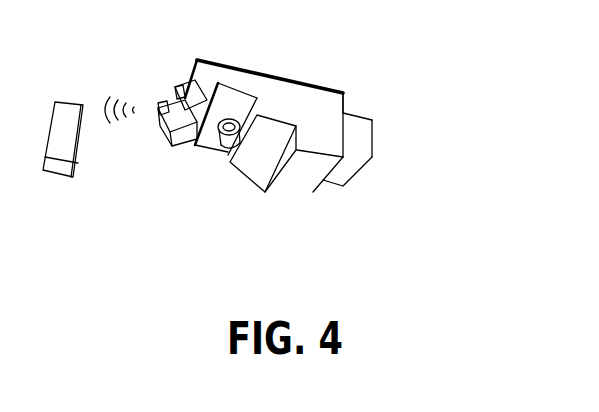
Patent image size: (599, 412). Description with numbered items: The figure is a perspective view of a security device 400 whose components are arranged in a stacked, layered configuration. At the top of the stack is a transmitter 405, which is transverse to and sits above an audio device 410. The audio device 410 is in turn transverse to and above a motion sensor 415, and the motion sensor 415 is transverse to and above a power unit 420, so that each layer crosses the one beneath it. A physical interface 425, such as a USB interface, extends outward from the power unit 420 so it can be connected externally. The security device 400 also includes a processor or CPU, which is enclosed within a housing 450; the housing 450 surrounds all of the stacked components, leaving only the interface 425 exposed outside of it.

The security device 400 is at (452, 63).
The transmitter 405 is at (197, 59).
The audio device 410 is at (225, 150).
The motion sensor 415 is at (252, 162).
The power unit 420 is at (298, 183).
The physical interface 425 is at (362, 144).
The housing 450 is at (327, 100).